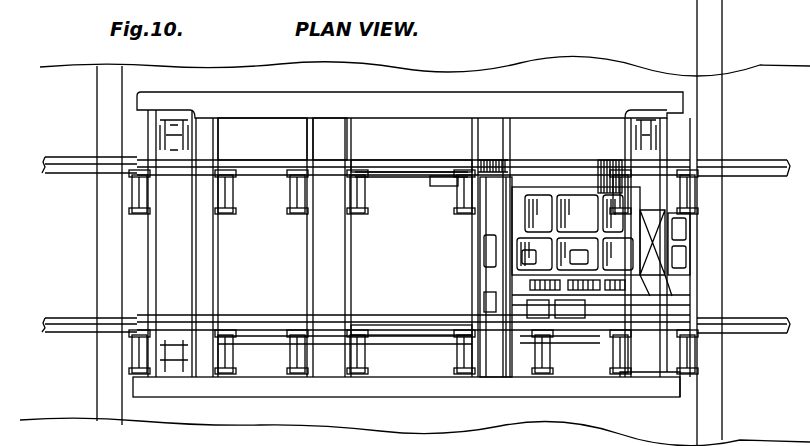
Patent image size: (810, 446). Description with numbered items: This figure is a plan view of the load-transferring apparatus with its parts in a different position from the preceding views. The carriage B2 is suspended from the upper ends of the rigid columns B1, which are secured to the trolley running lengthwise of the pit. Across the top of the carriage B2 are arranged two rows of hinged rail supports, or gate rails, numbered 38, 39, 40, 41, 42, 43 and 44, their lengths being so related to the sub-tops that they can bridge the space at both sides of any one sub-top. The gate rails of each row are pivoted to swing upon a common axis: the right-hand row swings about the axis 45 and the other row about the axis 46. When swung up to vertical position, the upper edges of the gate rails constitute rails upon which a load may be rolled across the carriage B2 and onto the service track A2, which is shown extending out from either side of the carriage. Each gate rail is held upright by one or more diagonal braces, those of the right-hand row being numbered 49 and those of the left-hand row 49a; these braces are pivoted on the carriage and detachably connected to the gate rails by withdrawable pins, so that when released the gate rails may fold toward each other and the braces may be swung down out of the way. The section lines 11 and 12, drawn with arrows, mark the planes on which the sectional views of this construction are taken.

The section line 11 is at (125, 445).
The section line 12 is at (245, 235).
The gate rail 38 is at (137, 160).
The gate rail 39 is at (262, 168).
The gate rail 40 is at (330, 160).
The gate rail 41 is at (396, 168).
The gate rail 42 is at (483, 272).
The gate rail 43 is at (512, 185).
The gate rail 44 is at (668, 282).
The axis 45 is at (375, 320).
The axis 46 is at (560, 178).
The brace 49 is at (137, 352).
The brace 49a is at (137, 198).
The service track A2 is at (50, 168).
The carriage B2 is at (482, 100).
The rigid column B1 is at (650, 378).